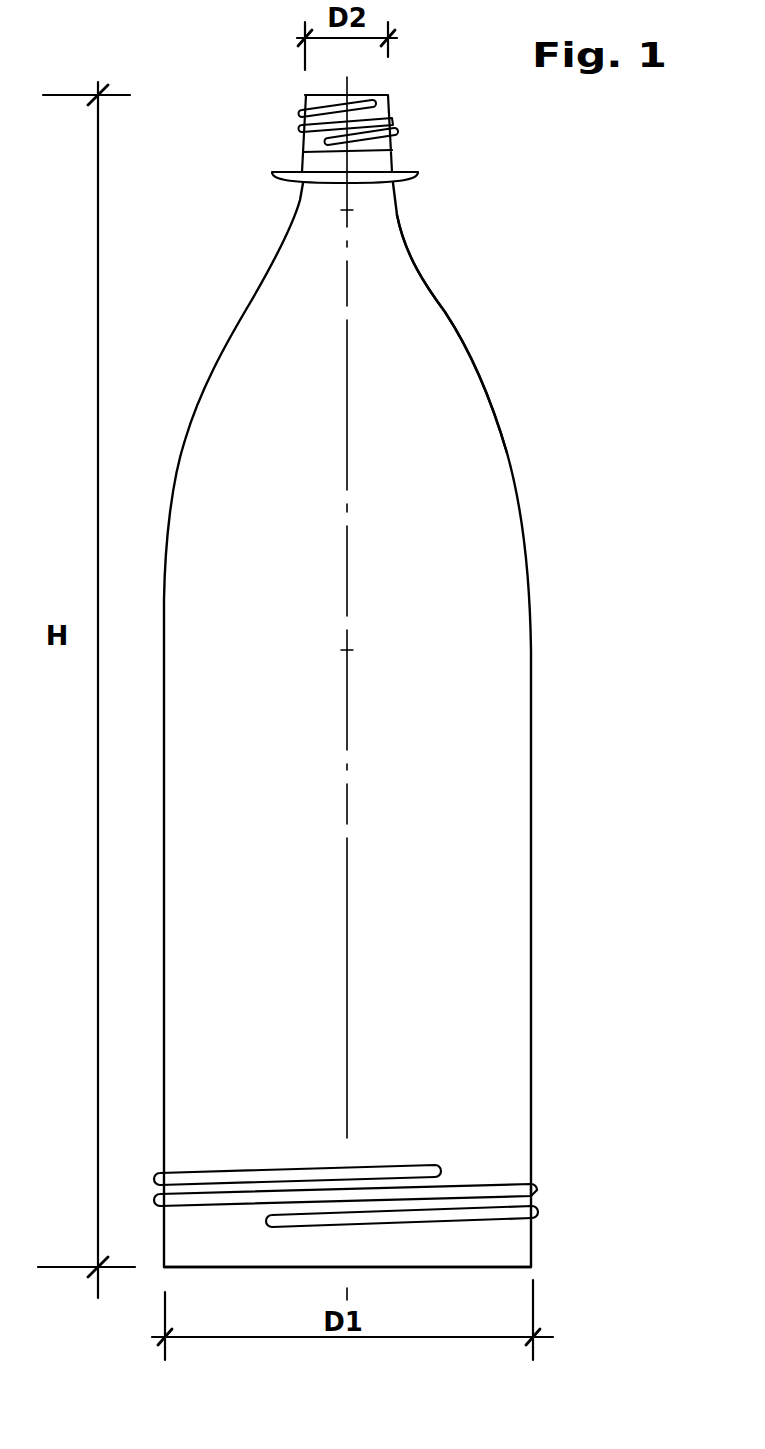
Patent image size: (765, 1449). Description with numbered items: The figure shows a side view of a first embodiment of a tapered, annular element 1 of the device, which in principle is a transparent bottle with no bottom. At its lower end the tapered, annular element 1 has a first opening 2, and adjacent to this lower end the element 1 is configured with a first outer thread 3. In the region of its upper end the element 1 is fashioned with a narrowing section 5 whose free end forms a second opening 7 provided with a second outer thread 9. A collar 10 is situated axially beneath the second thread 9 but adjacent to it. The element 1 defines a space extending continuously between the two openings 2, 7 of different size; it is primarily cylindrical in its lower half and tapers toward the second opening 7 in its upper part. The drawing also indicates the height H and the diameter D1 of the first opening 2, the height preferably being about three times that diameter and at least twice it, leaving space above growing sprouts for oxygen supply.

The tapered, annular element 1 is at (530, 654).
The first opening 2 is at (440, 1272).
The first outer thread 3 is at (537, 1186).
The narrowing section 5 is at (473, 349).
The second opening 7 is at (371, 93).
The second outer thread 9 is at (385, 118).
The collar 10 is at (404, 173).